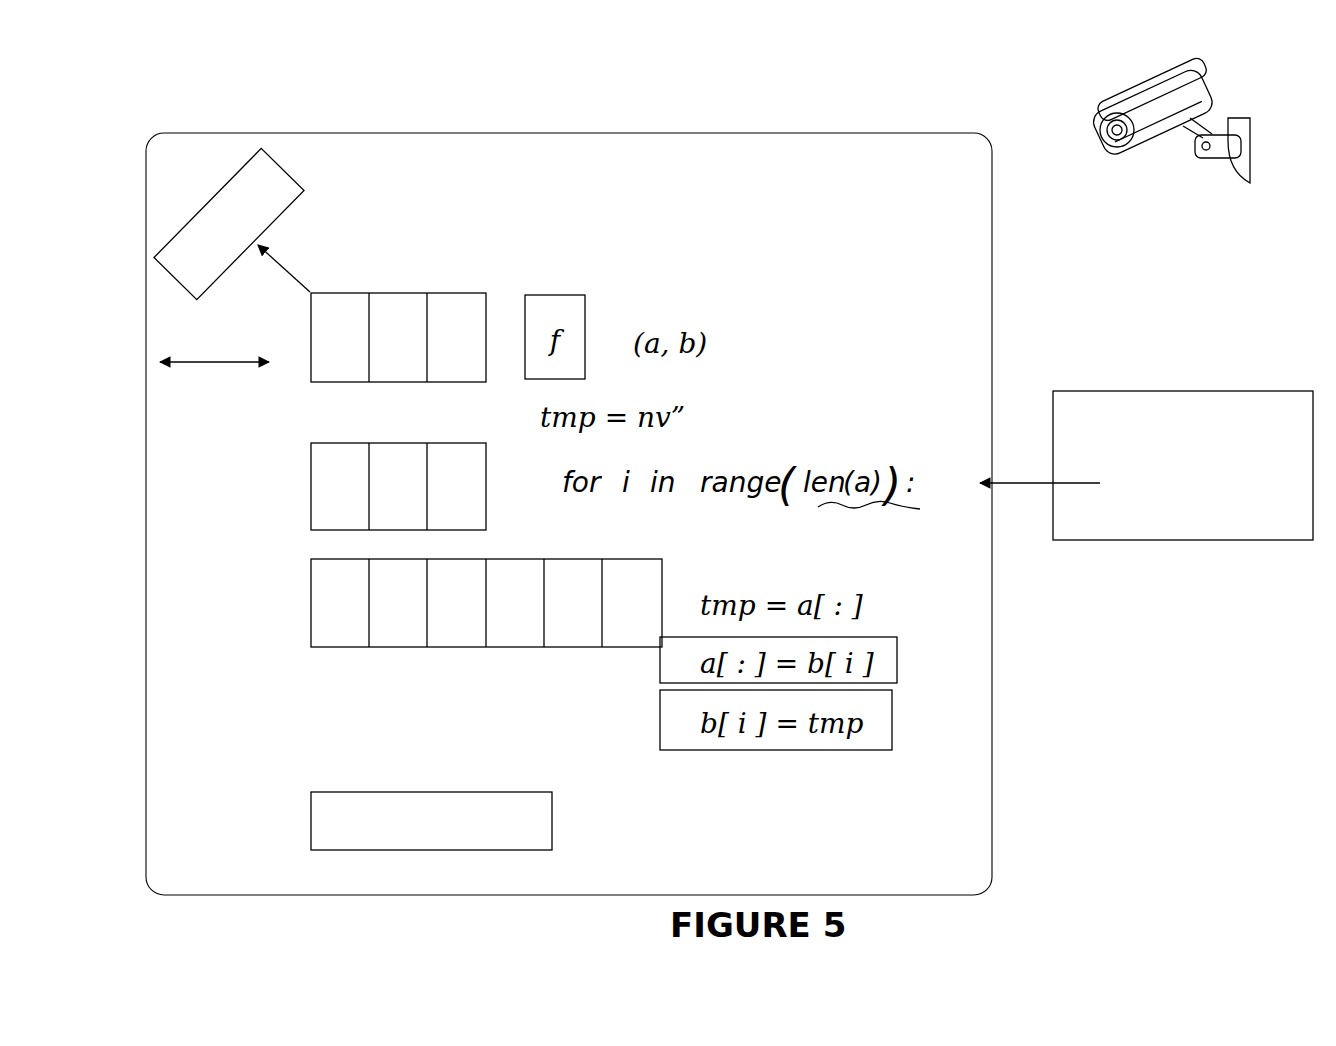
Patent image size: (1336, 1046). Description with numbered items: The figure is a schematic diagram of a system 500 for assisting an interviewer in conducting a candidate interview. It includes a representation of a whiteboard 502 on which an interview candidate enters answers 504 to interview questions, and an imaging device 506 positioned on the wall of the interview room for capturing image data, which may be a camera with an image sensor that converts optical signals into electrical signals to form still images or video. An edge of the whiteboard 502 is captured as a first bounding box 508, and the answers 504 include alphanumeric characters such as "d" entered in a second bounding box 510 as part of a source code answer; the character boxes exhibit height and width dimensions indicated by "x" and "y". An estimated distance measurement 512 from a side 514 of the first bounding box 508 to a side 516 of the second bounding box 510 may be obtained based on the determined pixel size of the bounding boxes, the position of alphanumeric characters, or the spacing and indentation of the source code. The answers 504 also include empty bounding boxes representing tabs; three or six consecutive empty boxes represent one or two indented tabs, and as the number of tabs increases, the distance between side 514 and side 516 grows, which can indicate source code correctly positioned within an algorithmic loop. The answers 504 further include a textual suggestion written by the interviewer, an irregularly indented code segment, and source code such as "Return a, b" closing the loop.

The system 500 is at (570, 125).
The whiteboard 502 is at (313, 340).
The answers 504 is at (183, 218).
The imaging device 506 is at (322, 655).
The first bounding box 508 is at (1226, 549).
The second bounding box 510 is at (950, 292).
The estimated distance measurement 512 is at (390, 858).
The side of first bounding box 514 is at (1170, 194).
The side of second bounding box 516 is at (145, 342).